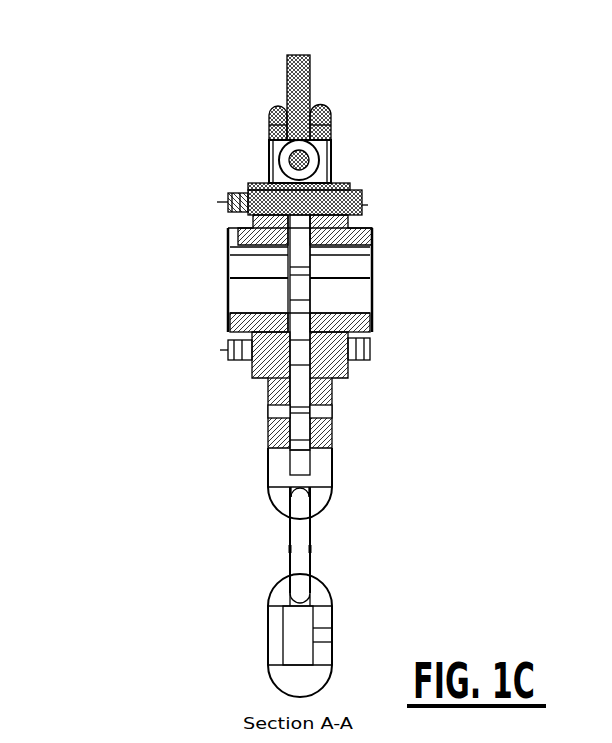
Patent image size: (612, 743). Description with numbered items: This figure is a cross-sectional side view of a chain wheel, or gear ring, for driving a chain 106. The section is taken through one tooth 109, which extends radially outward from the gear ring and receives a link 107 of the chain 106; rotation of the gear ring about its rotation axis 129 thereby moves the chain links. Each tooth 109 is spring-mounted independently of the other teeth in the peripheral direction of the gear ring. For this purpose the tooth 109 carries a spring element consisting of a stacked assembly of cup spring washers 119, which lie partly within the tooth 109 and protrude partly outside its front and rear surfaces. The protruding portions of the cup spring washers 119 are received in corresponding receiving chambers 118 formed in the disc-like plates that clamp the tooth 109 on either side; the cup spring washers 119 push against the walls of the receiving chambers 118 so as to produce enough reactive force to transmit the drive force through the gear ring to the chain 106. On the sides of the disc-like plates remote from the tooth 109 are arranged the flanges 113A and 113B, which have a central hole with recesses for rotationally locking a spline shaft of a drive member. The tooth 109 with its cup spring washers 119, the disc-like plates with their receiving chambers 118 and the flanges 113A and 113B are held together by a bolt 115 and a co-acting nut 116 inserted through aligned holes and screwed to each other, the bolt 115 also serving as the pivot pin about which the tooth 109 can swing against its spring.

The tooth 109 is at (298, 73).
The link 107 is at (270, 118).
The receiving chamber 118 is at (268, 172).
The cup spring washer 119 is at (299, 160).
The flange 113A is at (355, 232).
The flange 113B is at (245, 233).
The rotation axis 129 is at (245, 278).
The nut 116 is at (228, 350).
The bolt 115 is at (362, 347).
The chain 106 is at (245, 546).